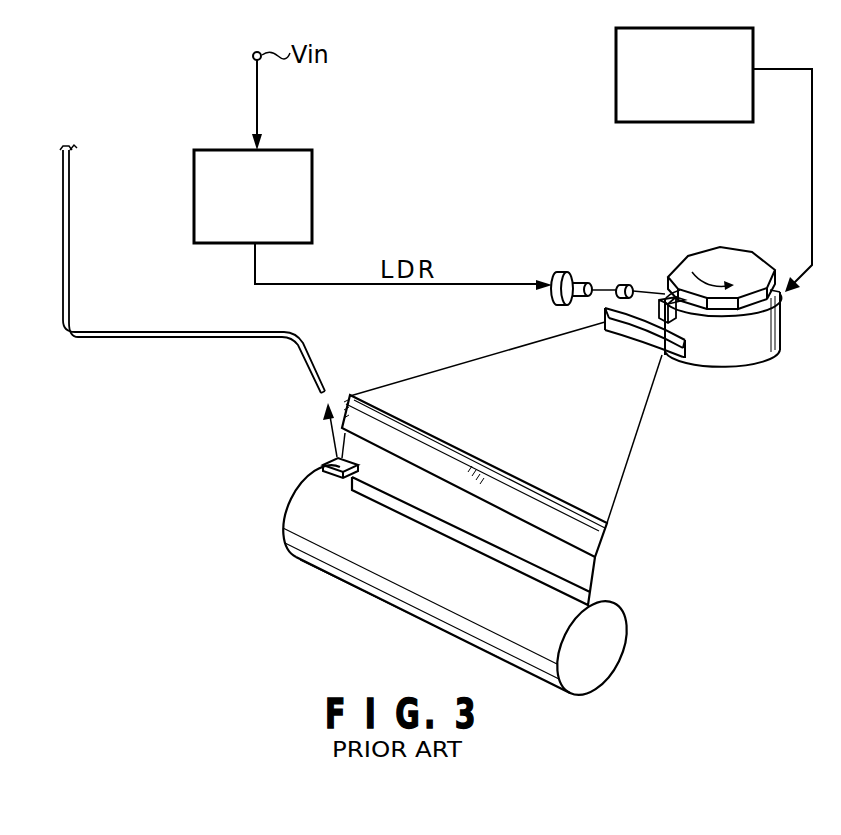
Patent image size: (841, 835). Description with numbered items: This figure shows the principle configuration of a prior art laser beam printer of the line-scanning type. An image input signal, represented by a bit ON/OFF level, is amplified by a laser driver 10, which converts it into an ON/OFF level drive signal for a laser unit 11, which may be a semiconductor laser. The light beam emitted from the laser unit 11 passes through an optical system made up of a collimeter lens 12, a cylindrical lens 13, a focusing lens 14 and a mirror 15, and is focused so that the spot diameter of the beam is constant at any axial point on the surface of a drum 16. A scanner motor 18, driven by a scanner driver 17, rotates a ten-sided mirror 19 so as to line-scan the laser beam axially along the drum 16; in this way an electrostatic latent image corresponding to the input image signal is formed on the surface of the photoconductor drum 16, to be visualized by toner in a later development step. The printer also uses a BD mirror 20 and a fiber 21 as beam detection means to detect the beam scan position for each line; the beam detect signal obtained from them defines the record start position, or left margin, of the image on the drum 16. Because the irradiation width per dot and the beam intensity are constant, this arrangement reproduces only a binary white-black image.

The laser driver 10 is at (313, 183).
The laser unit 11 is at (553, 283).
The collimeter lens 12 is at (578, 283).
The cylindrical lens 13 is at (625, 287).
The focusing lens 14 is at (680, 306).
The mirror 15 is at (609, 541).
The drum 16 is at (620, 640).
The scanner driver 17 is at (616, 66).
The scanner motor 18 is at (780, 340).
The 10-sided mirror 19 is at (741, 262).
The BD mirror 20 is at (325, 462).
The fiber 21 is at (196, 332).